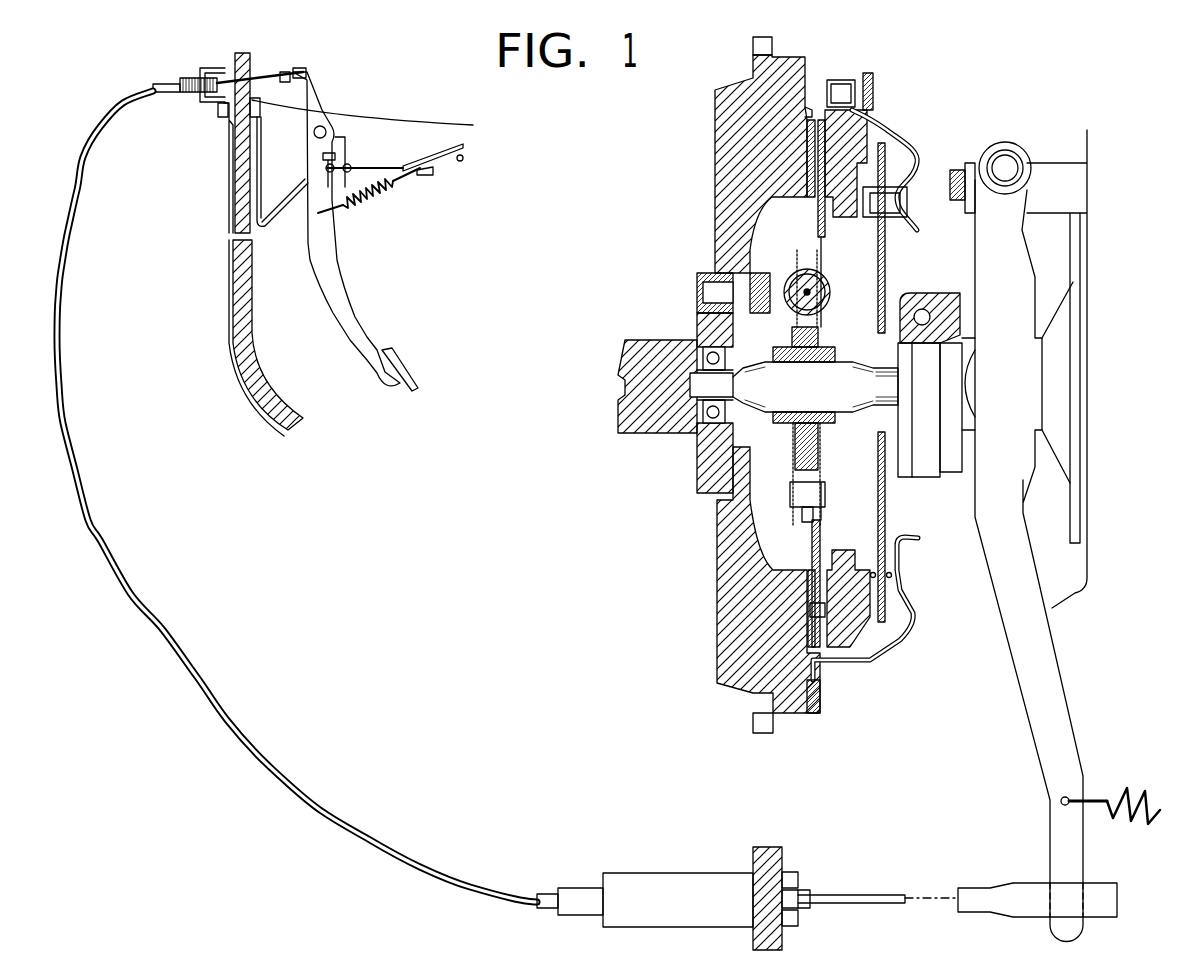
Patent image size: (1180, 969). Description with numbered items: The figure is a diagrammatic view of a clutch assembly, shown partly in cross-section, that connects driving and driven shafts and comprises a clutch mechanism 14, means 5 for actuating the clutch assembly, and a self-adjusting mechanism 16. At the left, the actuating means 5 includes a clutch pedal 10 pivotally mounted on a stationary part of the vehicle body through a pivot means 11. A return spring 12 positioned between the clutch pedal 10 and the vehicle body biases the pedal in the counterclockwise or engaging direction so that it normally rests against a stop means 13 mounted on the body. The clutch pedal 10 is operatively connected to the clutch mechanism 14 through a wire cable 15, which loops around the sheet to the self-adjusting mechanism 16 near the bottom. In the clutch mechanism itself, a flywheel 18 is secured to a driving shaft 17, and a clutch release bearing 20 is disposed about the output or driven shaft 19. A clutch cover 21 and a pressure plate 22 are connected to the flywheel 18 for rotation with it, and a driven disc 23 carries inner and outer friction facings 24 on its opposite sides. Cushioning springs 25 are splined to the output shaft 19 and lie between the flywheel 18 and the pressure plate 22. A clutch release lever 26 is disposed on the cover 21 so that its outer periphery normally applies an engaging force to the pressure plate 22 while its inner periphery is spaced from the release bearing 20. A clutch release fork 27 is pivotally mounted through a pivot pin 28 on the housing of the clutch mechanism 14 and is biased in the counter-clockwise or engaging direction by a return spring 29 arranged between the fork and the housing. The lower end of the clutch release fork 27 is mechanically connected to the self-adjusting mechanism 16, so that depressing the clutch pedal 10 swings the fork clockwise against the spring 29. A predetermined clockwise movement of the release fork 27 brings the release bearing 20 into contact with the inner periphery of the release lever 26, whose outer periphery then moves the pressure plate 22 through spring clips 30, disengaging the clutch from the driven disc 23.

The means for actuating the clutch assembly 5 is at (317, 81).
The clutch pedal 10 is at (343, 310).
The pivot means 11 is at (333, 128).
The return spring 12 is at (377, 200).
The stop means 13 is at (350, 167).
The clutch mechanism 14 is at (852, 677).
The wire cable 15 is at (115, 125).
The self-adjusting mechanism 16 is at (683, 873).
The driving shaft 17 is at (653, 427).
The flywheel 18 is at (727, 142).
The output shaft 19 is at (877, 410).
The clutch release bearing 20 is at (928, 477).
The clutch cover 21 is at (910, 640).
The pressure plate 22 is at (858, 625).
The driven disc 23 is at (822, 240).
The friction facings 24 is at (810, 108).
The cushioning springs 25 is at (795, 277).
The clutch release lever 26 is at (880, 492).
The clutch release fork 27 is at (1035, 705).
The pivot pin 28 is at (1015, 167).
The return spring 29 is at (1113, 800).
The spring clips 30 is at (873, 107).